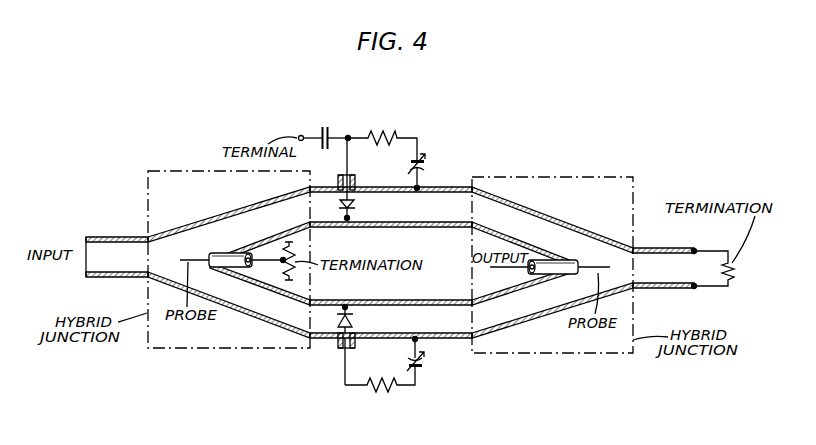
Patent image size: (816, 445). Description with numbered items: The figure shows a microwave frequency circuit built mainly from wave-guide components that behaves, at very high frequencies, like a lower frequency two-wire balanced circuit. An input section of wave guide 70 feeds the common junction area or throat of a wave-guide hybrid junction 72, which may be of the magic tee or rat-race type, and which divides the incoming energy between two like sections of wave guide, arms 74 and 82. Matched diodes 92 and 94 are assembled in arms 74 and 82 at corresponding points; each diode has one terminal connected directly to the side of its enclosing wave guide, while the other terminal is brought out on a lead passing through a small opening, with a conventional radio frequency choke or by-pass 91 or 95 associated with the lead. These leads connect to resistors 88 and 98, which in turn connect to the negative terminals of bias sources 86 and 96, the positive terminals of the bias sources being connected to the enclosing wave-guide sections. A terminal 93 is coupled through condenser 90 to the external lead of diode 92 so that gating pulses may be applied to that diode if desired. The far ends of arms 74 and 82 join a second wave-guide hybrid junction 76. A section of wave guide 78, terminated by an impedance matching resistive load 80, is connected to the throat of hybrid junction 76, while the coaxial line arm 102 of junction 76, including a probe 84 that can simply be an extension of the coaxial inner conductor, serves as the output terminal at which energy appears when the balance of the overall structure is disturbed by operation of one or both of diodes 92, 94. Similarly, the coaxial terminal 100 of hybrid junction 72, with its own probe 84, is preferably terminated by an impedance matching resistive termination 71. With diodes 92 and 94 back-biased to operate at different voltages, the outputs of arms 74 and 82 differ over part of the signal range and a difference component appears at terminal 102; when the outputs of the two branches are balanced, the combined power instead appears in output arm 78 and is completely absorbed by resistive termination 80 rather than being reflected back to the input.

The input section of wave guide 70 is at (126, 226).
The impedance matching resistive termination 71 is at (297, 247).
The wave-guide hybrid junction 72 is at (190, 170).
The arm 74 is at (424, 247).
The wave-guide hybrid junction 76 is at (565, 177).
The section of wave guide 78 is at (672, 240).
The impedance matching resistive load 80 is at (735, 268).
The arm 82 is at (424, 295).
The probe 84 is at (195, 257).
The bias source 86 is at (432, 160).
The resistor 88 is at (380, 133).
The condenser 90 is at (328, 126).
The radio frequency choke or by-pass 91 is at (357, 181).
The diode 92 is at (357, 207).
The terminal 93 is at (300, 135).
The diode 94 is at (355, 318).
The radio frequency choke or by-pass 95 is at (337, 345).
The bias source 96 is at (430, 362).
The resistor 98 is at (378, 390).
The terminal 100 is at (229, 268).
The coaxial line arm 102 is at (553, 275).